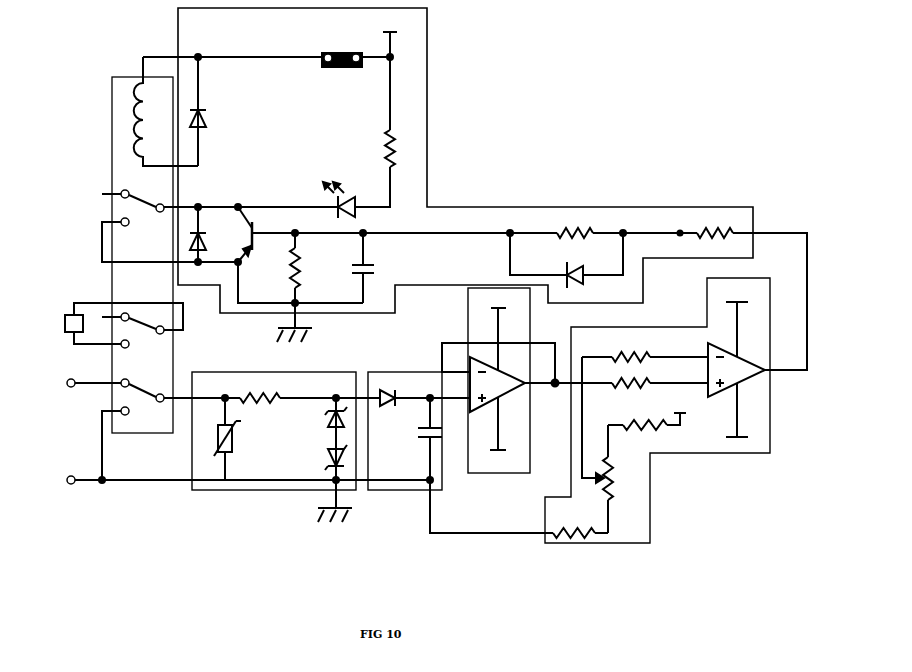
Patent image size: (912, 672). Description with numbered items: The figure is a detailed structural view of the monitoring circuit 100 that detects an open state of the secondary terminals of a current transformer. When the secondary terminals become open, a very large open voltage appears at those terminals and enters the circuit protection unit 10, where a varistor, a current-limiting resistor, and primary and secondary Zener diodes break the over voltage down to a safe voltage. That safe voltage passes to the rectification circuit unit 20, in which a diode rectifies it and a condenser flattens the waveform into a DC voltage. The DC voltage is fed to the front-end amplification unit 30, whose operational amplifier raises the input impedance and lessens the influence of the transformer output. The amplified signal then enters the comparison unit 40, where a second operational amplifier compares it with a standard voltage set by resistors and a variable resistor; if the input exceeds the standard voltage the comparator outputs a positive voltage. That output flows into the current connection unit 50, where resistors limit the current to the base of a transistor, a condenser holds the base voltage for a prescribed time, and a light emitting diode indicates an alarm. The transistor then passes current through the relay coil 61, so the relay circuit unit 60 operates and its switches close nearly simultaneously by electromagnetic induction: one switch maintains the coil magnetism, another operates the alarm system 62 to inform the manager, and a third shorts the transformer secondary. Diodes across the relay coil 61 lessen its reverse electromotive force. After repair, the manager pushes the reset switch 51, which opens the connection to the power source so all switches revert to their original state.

The monitoring circuit 100 is at (108, 46).
The circuit protection unit 10 is at (218, 371).
The rectification circuit unit 20 is at (386, 371).
The front-end amplification unit 30 is at (468, 307).
The comparison unit 40 is at (707, 300).
The current connection unit 50 is at (427, 82).
The reset switch 51 is at (340, 53).
The relay circuit unit 60 is at (112, 170).
The relay coil 61 is at (138, 125).
The alarm system 62 is at (65, 322).